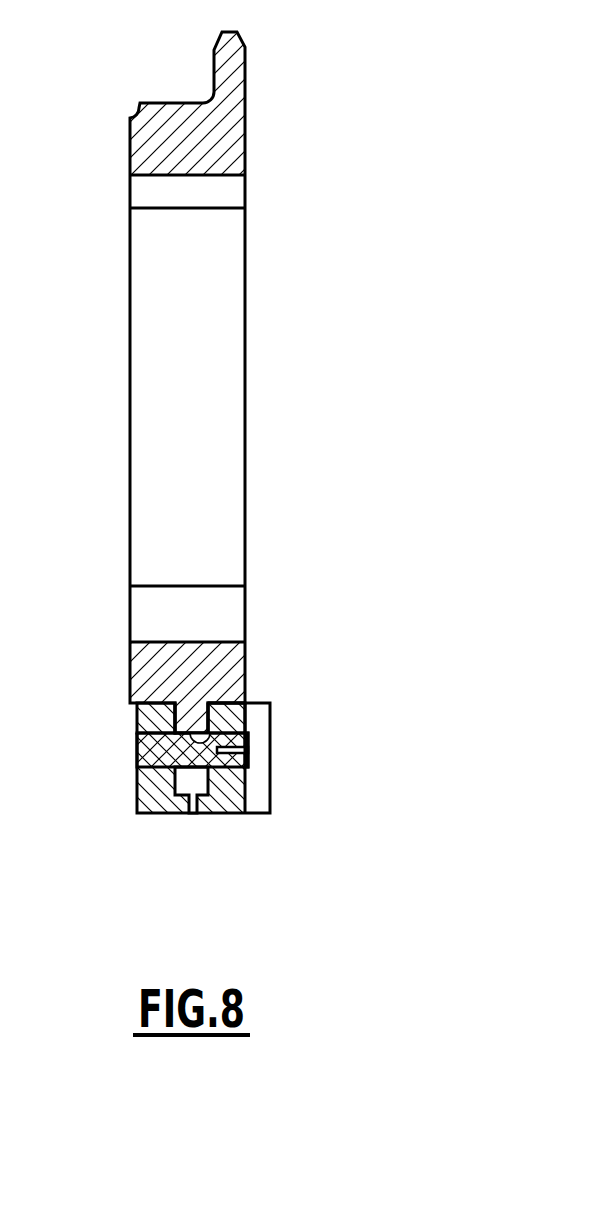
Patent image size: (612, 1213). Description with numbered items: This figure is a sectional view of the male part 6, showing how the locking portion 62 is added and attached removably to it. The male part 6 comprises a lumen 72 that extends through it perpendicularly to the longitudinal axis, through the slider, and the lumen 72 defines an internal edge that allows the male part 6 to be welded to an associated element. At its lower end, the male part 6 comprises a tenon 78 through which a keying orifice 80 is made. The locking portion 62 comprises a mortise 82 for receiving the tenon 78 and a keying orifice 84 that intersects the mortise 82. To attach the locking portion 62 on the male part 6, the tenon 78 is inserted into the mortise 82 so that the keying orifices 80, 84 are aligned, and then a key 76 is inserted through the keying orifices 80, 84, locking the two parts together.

The male part 6 is at (259, 382).
The lumen 72 is at (197, 421).
The tenon 78 is at (200, 720).
The locking portion 62 is at (266, 798).
The key 76 is at (197, 750).
The keying orifice 80 is at (225, 750).
The keying orifice 84 is at (242, 765).
The mortise 82 is at (199, 803).